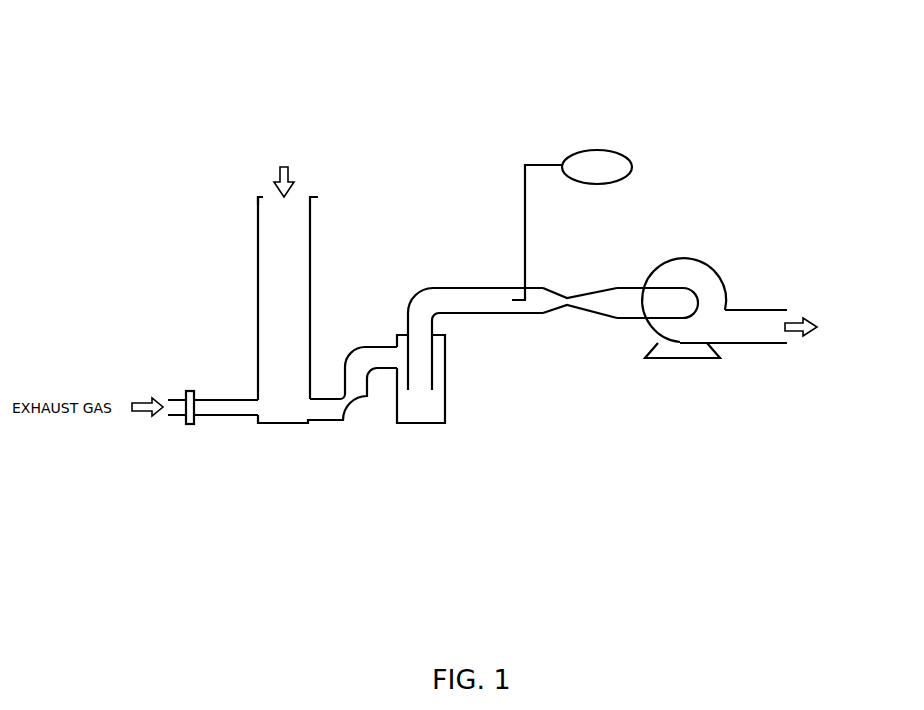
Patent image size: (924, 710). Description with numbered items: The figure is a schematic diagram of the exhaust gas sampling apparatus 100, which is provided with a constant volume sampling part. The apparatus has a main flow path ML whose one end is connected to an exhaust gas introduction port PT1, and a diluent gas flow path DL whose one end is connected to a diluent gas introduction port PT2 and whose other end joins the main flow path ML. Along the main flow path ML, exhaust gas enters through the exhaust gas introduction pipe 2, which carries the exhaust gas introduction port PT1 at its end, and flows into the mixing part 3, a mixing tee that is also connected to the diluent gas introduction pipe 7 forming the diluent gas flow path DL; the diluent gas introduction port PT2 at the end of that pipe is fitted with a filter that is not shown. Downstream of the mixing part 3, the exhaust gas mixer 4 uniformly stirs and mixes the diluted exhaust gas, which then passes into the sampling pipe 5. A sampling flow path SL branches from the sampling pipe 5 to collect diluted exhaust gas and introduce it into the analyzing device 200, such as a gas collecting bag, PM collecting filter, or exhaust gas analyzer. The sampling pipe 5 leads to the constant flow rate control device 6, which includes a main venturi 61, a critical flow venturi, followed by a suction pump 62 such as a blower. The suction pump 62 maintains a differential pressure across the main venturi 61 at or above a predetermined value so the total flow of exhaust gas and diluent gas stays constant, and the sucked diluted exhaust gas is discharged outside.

The exhaust gas sampling apparatus 100 is at (357, 85).
The exhaust gas introduction pipe 2 is at (226, 418).
The mixing part 3 is at (283, 425).
The exhaust gas mixer 4 is at (418, 425).
The sampling pipe 5 is at (462, 288).
The constant flow rate control device 6 is at (628, 343).
The main venturi 61 is at (569, 306).
The suction pump 62 is at (686, 360).
The diluent gas introduction pipe 7 is at (257, 277).
The analyzing device 200 is at (598, 150).
The exhaust gas introduction port PT1 is at (180, 416).
The diluent gas introduction port PT2 is at (257, 199).
The diluent gas flow path DL is at (282, 318).
The main flow path ML is at (480, 317).
The sampling flow path SL is at (526, 220).